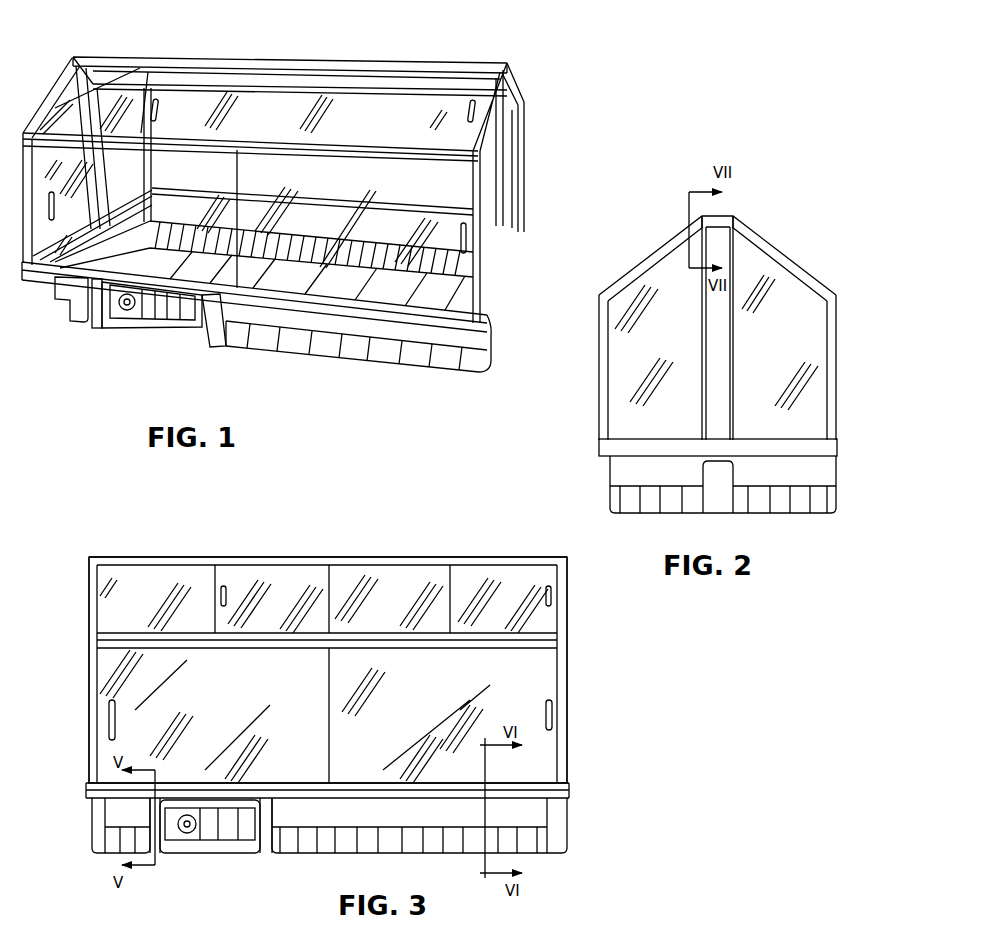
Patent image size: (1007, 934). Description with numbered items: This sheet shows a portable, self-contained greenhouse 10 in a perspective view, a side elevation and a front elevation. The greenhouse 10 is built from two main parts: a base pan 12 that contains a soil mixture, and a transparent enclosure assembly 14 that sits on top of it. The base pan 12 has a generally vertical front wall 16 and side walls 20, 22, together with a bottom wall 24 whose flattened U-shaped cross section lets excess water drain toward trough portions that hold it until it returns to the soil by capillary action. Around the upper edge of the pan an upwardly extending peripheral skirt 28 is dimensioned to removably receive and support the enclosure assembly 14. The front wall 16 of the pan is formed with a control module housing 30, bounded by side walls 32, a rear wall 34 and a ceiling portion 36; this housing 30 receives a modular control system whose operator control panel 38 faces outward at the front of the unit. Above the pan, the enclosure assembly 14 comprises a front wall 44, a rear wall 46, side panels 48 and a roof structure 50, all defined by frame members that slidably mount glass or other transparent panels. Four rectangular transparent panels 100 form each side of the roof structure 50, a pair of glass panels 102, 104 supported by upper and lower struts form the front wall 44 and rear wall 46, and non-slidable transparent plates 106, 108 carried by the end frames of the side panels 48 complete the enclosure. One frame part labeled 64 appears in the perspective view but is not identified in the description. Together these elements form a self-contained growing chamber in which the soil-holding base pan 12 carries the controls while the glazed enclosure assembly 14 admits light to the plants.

In FIG. 1, the portable greenhouse 10 is at (307, 182).
In FIG. 2, the portable greenhouse 10 is at (816, 210).
In FIG. 3, the portable greenhouse 10 is at (177, 540).
In FIG. 1, the base pan 12 is at (352, 362).
In FIG. 2, the base pan 12 is at (610, 478).
In FIG. 3, the base pan 12 is at (370, 825).
In FIG. 1, the transparent enclosure assembly 14 is at (313, 190).
In FIG. 3, the transparent enclosure assembly 14 is at (370, 670).
In FIG. 1, the front wall 16 is at (268, 353).
In FIG. 3, the front wall 16 is at (422, 808).
In FIG. 1, the side wall 20 is at (507, 300).
In FIG. 2, the side wall 20 is at (780, 467).
In FIG. 1, the side wall 22 is at (83, 253).
In FIG. 1, the bottom wall 24 is at (462, 302).
In FIG. 1, the peripheral skirt 28 is at (427, 317).
In FIG. 2, the peripheral skirt 28 is at (826, 450).
In FIG. 3, the peripheral skirt 28 is at (570, 790).
In FIG. 1, the control module housing 30 is at (152, 334).
In FIG. 3, the control module housing 30 is at (225, 846).
In FIG. 1, the side walls 32 is at (102, 305).
In FIG. 3, the side walls 32 is at (163, 855).
In FIG. 1, the rear wall 34 is at (192, 330).
In FIG. 3, the rear wall 34 is at (196, 843).
In FIG. 1, the ceiling portion 36 is at (110, 300).
In FIG. 3, the ceiling portion 36 is at (218, 808).
In FIG. 1, the operator control panel 38 is at (183, 303).
In FIG. 3, the operator control panel 38 is at (228, 825).
In FIG. 1, the front wall 44 is at (165, 247).
In FIG. 2, the front wall 44 is at (597, 406).
In FIG. 3, the front wall 44 is at (313, 681).
In FIG. 2, the rear wall 46 is at (838, 366).
In FIG. 1, the side panels 48 is at (325, 194).
In FIG. 2, the side panels 48 is at (716, 328).
In FIG. 3, the side panels 48 is at (568, 645).
In FIG. 1, the roof structure 50 is at (294, 50).
In FIG. 2, the roof structure 50 is at (652, 250).
In FIG. 3, the roof structure 50 is at (352, 555).
In FIG. 1, the front rail 64 is at (247, 140).
In FIG. 1, the rectangular transparent panels 100 is at (148, 125).
In FIG. 3, the rectangular transparent panels 100 is at (325, 599).
In FIG. 3, the glass panel 102 is at (214, 715).
In FIG. 3, the glass panel 104 is at (447, 725).
In FIG. 2, the transparent plate 106 is at (644, 345).
In FIG. 2, the transparent plate 108 is at (780, 342).